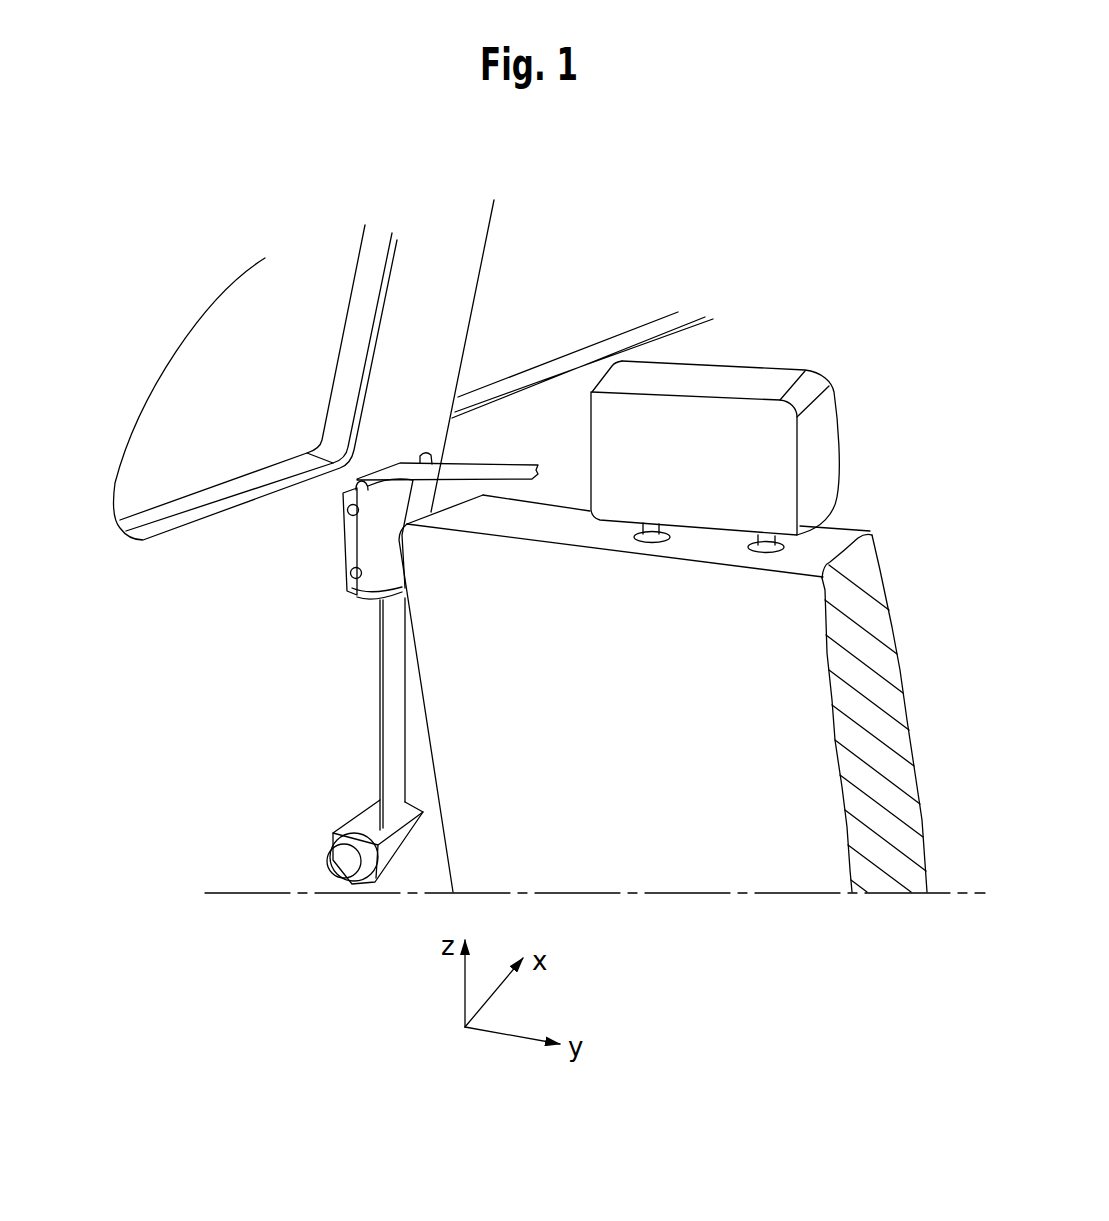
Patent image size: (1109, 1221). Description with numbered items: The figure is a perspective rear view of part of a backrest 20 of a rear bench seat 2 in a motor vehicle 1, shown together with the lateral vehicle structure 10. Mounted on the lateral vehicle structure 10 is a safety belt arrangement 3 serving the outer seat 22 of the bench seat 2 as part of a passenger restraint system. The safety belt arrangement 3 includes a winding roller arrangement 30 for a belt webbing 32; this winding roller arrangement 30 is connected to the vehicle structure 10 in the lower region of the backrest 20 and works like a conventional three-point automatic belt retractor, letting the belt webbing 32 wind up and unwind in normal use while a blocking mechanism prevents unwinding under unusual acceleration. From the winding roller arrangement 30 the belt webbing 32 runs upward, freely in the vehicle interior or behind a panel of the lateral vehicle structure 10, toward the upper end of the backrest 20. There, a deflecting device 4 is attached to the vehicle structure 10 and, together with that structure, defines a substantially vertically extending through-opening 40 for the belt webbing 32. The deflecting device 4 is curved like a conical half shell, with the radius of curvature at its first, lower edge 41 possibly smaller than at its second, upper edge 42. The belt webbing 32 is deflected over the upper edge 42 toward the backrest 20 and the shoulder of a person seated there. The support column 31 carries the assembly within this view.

The motor vehicle 1 is at (309, 614).
The rear bench seat 2 is at (687, 547).
The safety belt arrangement 3 is at (299, 871).
The deflecting device 4 is at (391, 509).
The lateral vehicle structure 10 is at (228, 620).
The backrest 20 is at (892, 627).
The outer seat 22 is at (763, 330).
The winding roller arrangement 30 is at (327, 829).
The support column 31 is at (376, 763).
The belt webbing 32 is at (392, 680).
The through-opening 40 is at (372, 467).
The first, lower edge 41 is at (369, 604).
The second, upper edge 42 is at (401, 493).